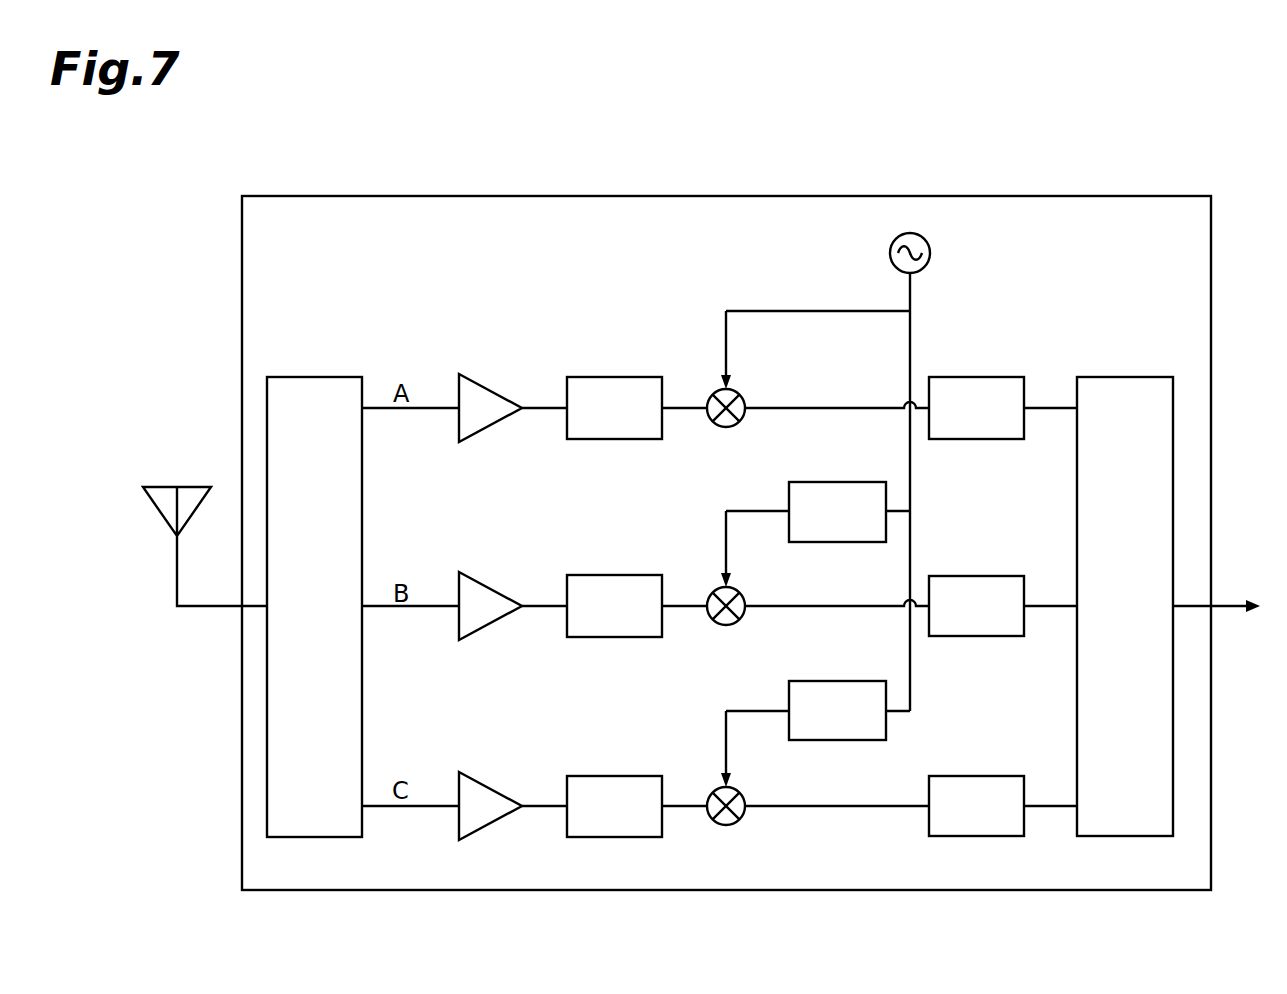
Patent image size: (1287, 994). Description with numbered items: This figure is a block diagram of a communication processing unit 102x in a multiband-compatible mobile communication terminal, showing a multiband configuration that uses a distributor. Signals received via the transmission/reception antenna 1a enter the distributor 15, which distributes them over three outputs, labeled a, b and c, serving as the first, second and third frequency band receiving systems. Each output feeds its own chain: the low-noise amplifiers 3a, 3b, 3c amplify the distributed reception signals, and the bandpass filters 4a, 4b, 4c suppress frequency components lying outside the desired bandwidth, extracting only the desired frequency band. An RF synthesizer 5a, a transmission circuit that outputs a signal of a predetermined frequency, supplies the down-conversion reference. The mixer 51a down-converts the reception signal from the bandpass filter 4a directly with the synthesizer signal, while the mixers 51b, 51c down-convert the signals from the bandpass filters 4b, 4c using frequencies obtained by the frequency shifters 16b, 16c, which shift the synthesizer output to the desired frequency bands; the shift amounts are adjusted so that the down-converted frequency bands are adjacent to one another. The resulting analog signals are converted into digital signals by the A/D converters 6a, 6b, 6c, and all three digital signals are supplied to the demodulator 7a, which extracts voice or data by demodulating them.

The communication processing unit 102x is at (1160, 196).
The transmission/reception antenna 1a is at (191, 487).
The distributor 15 is at (331, 377).
The low-noise amplifier 3a is at (499, 391).
The low-noise amplifier 3b is at (498, 590).
The low-noise amplifier 3c is at (498, 790).
The bandpass filter 4a is at (634, 377).
The bandpass filter 4b is at (634, 575).
The bandpass filter 4c is at (634, 776).
The mixer 51a is at (740, 394).
The mixer 51b is at (740, 592).
The mixer 51c is at (740, 792).
The RF synthesizer 5a is at (930, 254).
The frequency shifter 16b is at (852, 482).
The frequency shifter 16c is at (852, 681).
The A/D converter 6a is at (1003, 377).
The A/D converter 6b is at (1003, 576).
The A/D converter 6c is at (1003, 776).
The demodulator 7a is at (1138, 377).